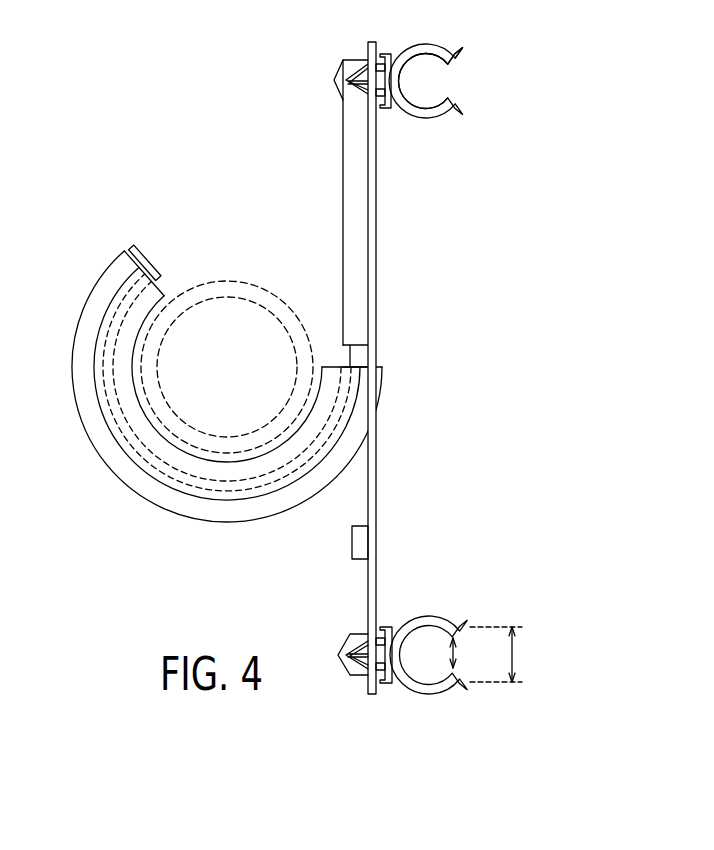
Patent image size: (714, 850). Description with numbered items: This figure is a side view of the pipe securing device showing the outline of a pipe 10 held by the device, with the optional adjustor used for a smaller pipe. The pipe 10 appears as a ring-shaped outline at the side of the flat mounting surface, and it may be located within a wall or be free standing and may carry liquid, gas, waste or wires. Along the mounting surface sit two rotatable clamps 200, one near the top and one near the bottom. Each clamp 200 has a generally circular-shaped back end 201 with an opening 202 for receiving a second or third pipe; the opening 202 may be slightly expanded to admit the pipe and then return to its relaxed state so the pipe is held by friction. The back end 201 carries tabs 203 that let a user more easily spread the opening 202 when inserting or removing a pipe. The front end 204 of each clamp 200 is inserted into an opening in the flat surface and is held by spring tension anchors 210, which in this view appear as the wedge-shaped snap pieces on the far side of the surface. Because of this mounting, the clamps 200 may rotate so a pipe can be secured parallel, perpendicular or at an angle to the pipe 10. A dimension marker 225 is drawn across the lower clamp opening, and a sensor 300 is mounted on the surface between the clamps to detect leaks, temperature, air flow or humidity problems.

The ring-shaped lighting assembly 10 is at (273, 300).
The upper clip 200 is at (419, 44).
The clip tab 201 is at (461, 52).
The clip receiving opening 202 is at (428, 83).
The clip arm end 203 is at (447, 62).
The snap fastener 204 is at (337, 79).
The lower clip 210 is at (356, 672).
The clip opening width 225 is at (514, 655).
The mounting block 300 is at (351, 537).